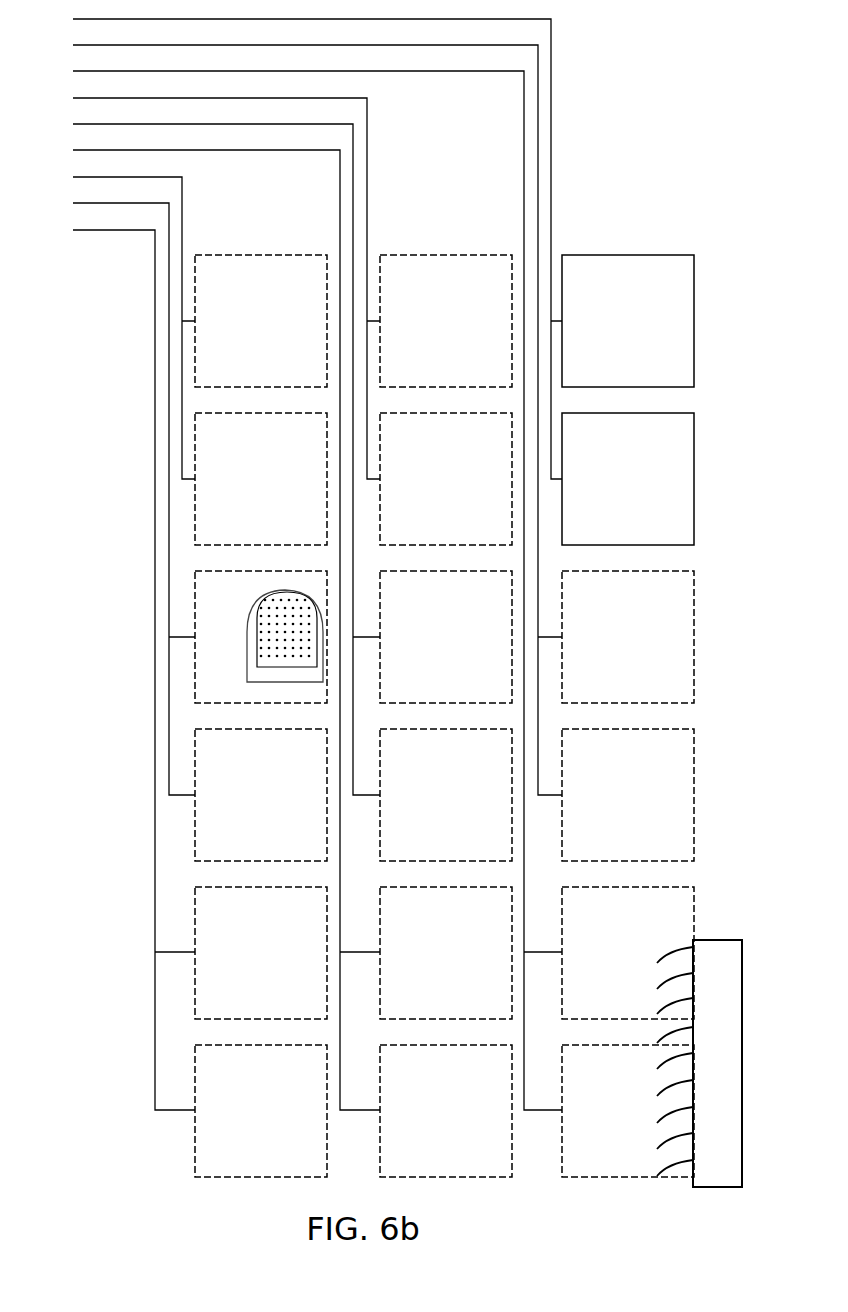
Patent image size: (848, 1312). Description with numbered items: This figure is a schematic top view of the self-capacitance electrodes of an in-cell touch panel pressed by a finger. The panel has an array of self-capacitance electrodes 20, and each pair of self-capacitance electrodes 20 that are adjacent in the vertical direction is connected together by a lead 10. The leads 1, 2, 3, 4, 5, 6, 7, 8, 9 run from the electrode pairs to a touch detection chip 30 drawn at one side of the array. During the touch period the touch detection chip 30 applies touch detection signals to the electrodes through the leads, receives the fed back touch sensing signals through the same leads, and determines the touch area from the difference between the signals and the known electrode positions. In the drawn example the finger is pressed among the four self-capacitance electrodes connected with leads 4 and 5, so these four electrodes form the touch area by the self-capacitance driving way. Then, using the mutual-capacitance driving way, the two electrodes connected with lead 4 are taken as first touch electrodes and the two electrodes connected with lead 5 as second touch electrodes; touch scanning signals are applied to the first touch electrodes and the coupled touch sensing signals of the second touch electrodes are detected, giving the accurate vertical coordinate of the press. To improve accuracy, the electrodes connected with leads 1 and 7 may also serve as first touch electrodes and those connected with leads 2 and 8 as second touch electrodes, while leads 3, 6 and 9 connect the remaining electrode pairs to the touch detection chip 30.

The lead 1 is at (305, 246).
The lead 2 is at (305, 417).
The lead 3 is at (305, 587).
The lead 4 is at (214, 285).
The lead 5 is at (214, 456).
The lead 6 is at (214, 627).
The lead 7 is at (122, 325).
The lead 8 is at (122, 496).
The lead 9 is at (122, 667).
The lead 10 is at (575, 182).
The self-capacitance electrode 20 is at (362, 561).
The touch detection chip 30 is at (699, 1063).